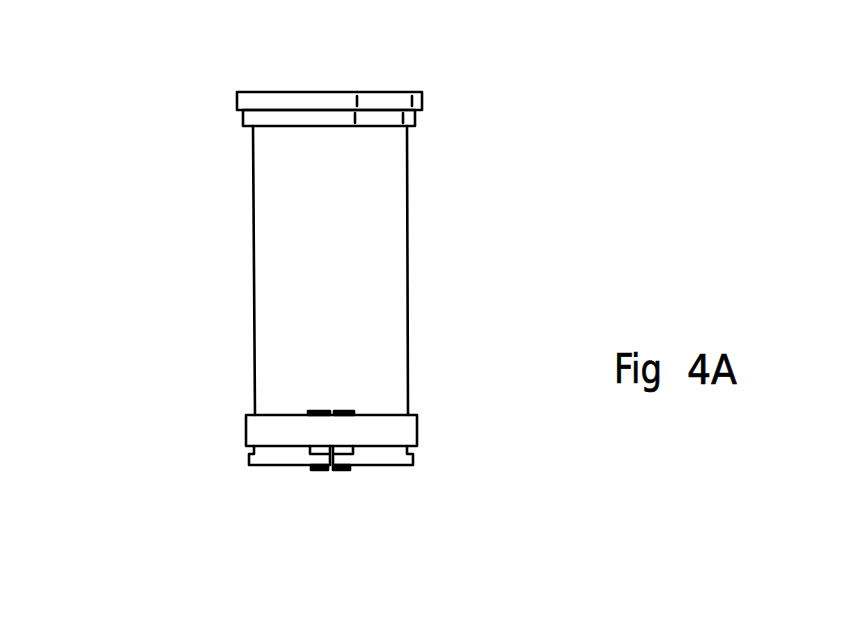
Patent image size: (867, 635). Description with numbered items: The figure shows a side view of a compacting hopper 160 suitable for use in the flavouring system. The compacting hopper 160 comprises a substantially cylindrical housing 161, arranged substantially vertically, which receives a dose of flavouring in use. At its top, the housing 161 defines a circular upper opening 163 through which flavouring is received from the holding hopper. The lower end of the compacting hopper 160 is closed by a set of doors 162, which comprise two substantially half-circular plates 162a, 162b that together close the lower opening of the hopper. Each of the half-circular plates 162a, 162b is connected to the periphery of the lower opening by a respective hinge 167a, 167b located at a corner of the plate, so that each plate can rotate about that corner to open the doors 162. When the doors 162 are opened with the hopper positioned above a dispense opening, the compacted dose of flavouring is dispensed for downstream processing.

The compacting hopper 160 is at (460, 252).
The substantially cylindrical housing 161 is at (253, 270).
The set of doors 162 is at (406, 470).
The half-circular plate 162a is at (383, 468).
The half-circular plate 162b is at (262, 467).
The circular upper opening 163 is at (357, 74).
The hinge 167a is at (343, 470).
The hinge 167b is at (315, 470).